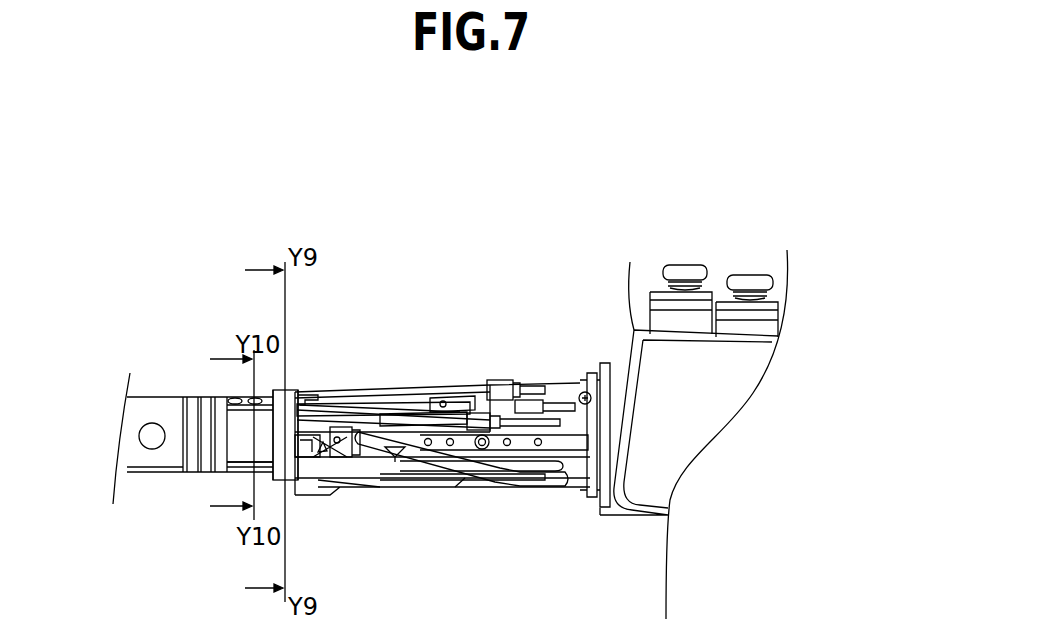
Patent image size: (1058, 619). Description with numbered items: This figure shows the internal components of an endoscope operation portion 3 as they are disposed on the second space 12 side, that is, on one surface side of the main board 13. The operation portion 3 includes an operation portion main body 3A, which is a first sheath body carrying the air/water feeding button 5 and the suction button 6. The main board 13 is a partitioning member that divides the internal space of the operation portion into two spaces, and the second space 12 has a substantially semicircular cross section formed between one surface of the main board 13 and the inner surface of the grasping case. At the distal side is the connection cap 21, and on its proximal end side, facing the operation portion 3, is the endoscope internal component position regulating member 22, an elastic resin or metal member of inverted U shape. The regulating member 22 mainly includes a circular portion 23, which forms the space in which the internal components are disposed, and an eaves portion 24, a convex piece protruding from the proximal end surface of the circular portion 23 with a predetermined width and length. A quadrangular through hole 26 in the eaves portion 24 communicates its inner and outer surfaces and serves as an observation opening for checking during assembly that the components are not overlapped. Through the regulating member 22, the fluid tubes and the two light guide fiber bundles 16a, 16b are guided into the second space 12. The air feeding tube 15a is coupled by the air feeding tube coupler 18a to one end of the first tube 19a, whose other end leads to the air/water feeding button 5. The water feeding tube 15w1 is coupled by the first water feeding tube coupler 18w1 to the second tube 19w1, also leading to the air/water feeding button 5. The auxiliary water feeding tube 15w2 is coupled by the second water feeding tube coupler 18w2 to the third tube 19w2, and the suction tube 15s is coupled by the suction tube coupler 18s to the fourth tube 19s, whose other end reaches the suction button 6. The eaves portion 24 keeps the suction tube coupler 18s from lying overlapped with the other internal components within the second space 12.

The operation portion 3 is at (610, 292).
The operation portion main body 3A is at (631, 330).
The air/water feeding button 5 is at (681, 263).
The suction button 6 is at (754, 269).
The second space 12 is at (429, 472).
The main board 13 is at (452, 477).
The air feeding tube 15a is at (443, 397).
The suction tube 15s is at (312, 440).
The water feeding tube 15w1 is at (400, 422).
The auxiliary water feeding tube 15w2 is at (420, 404).
The fiber bundle 16a is at (313, 450).
The fiber bundle 16b is at (287, 443).
The air feeding tube coupler 18a is at (497, 380).
The suction tube coupler 18s is at (339, 447).
The first water feeding tube coupler 18w1 is at (472, 415).
The second water feeding tube coupler 18w2 is at (525, 398).
The first tube 19a is at (581, 390).
The fourth tube 19s is at (400, 447).
The second tube 19w1 is at (533, 420).
The third tube 19w2 is at (567, 412).
The connection cap 21 is at (175, 404).
The endoscope internal component position regulating member 22 is at (297, 336).
The circular portion 23 is at (289, 396).
The eaves portion 24 is at (314, 426).
The through hole 26 is at (327, 443).